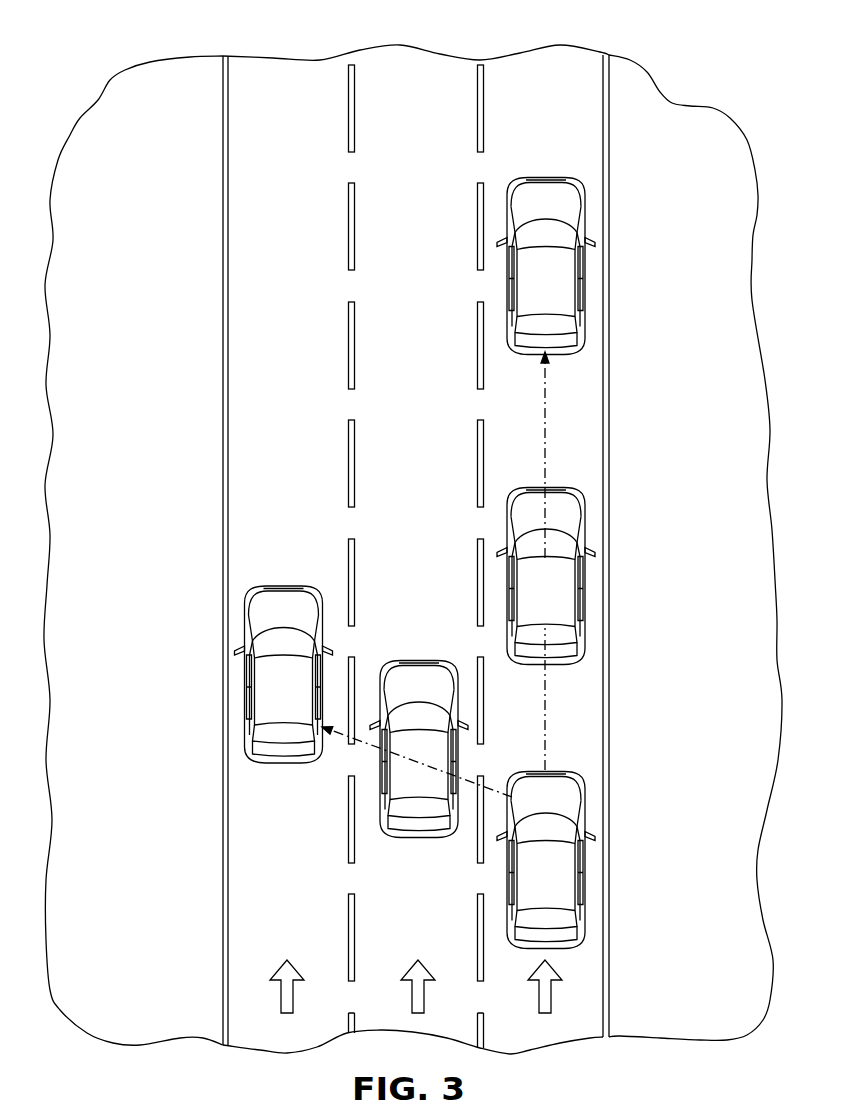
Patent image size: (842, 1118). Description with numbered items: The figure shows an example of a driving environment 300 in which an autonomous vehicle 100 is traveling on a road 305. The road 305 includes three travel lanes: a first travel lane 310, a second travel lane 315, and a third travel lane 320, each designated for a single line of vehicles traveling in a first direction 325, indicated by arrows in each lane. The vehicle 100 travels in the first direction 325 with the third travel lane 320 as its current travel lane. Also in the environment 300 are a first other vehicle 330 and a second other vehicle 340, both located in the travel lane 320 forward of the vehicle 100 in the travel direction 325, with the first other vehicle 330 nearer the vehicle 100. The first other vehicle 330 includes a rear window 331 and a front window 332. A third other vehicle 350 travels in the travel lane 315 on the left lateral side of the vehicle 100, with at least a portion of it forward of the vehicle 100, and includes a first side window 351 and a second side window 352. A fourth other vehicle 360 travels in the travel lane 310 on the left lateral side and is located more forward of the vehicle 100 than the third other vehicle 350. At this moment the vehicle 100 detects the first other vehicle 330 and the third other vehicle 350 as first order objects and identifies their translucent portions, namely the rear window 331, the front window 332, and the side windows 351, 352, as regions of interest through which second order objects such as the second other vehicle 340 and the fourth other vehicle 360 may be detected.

The vehicle 100 is at (586, 868).
The environment 300 is at (722, 216).
The road 305 is at (617, 738).
The first travel lane 310 is at (290, 76).
The second travel lane 315 is at (400, 66).
The third travel lane 320 is at (563, 66).
The first direction 325 is at (552, 995).
The first other vehicle 330 is at (585, 580).
The rear window 331 is at (583, 650).
The front window 332 is at (589, 530).
The second other vehicle 340 is at (586, 318).
The third other vehicle 350 is at (414, 786).
The first side window 351 is at (456, 805).
The second side window 352 is at (372, 795).
The fourth other vehicle 360 is at (288, 764).